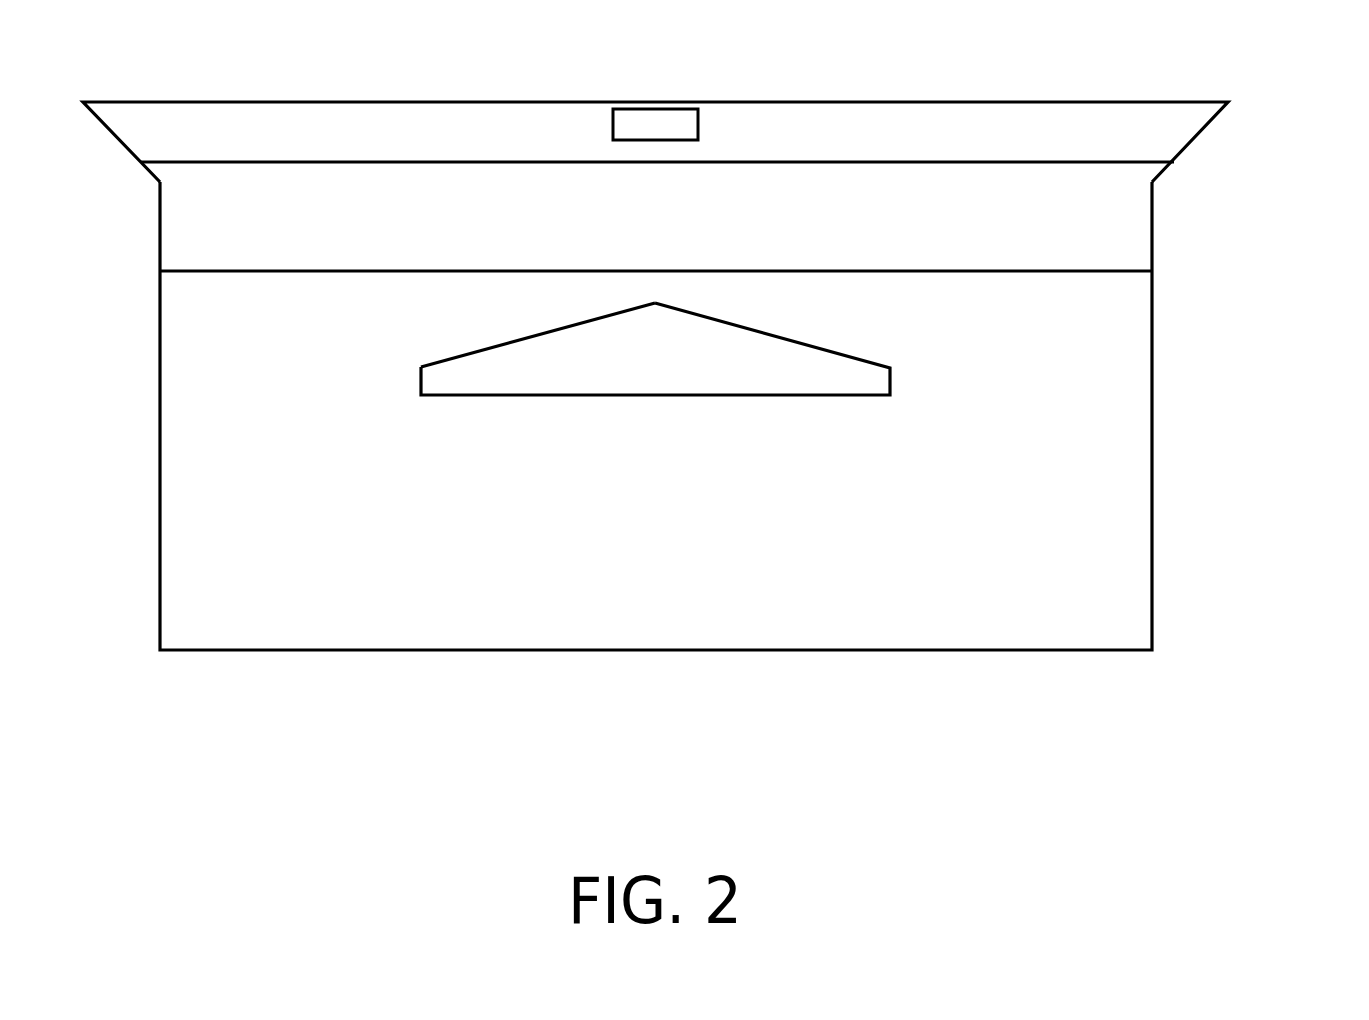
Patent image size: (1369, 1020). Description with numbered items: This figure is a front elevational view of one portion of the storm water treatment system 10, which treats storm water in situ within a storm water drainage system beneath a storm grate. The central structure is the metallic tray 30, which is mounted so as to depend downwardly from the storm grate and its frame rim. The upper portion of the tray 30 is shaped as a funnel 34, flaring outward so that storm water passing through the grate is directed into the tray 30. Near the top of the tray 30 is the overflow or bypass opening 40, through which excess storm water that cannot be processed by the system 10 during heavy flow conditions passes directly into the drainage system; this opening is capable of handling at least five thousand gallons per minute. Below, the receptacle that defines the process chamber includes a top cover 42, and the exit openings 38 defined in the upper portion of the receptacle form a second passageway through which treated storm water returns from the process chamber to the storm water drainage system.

The system 10 is at (1198, 370).
The metallic tray 30 is at (160, 572).
The funnel 34 is at (1200, 137).
The exit openings 38 is at (807, 370).
The bypass opening 40 is at (823, 178).
The top cover 42 is at (540, 333).